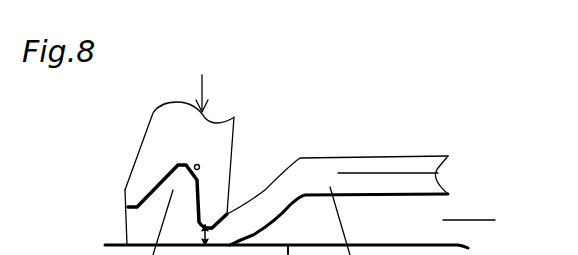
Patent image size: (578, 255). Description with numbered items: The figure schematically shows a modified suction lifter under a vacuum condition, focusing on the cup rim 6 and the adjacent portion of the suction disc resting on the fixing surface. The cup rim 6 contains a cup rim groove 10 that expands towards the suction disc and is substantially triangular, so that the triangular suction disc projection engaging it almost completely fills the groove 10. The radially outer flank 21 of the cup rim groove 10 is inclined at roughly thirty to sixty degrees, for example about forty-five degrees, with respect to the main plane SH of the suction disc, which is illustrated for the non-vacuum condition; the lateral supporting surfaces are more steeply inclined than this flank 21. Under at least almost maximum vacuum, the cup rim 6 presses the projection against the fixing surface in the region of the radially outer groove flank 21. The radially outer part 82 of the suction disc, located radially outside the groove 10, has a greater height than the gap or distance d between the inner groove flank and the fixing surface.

The cup rim 6 is at (148, 148).
The cup rim groove 10 is at (199, 165).
The radially outer flank of the cup rim groove 21 is at (152, 190).
The radially outer part of the suction disc 82 is at (130, 228).
The gap or distance d is at (211, 235).
The main plane of the suction disc SH is at (471, 213).